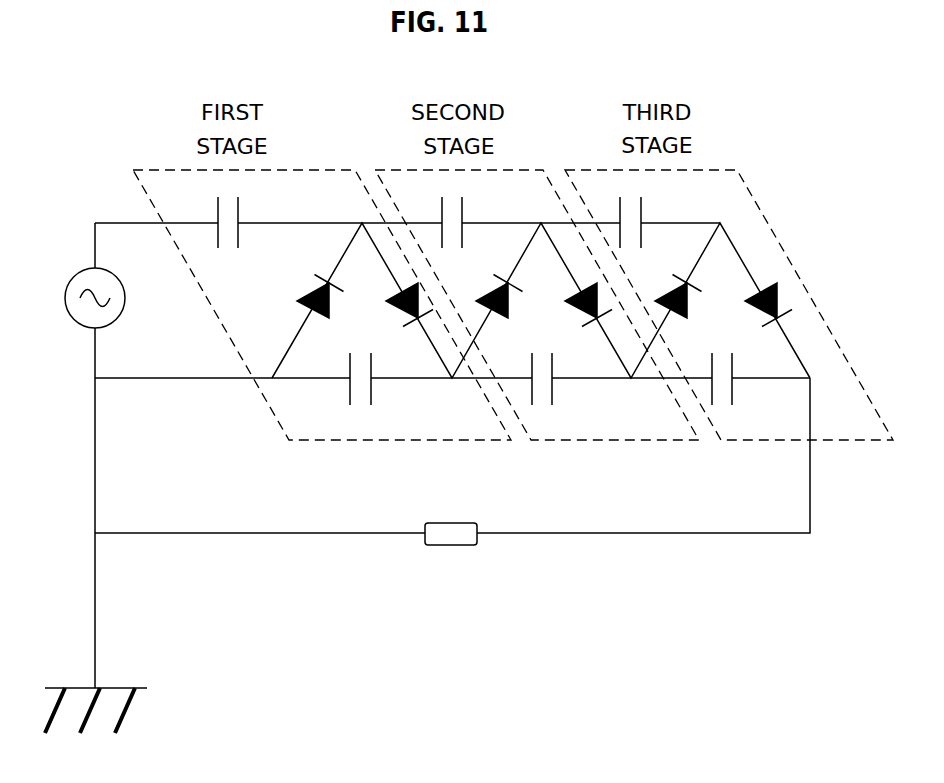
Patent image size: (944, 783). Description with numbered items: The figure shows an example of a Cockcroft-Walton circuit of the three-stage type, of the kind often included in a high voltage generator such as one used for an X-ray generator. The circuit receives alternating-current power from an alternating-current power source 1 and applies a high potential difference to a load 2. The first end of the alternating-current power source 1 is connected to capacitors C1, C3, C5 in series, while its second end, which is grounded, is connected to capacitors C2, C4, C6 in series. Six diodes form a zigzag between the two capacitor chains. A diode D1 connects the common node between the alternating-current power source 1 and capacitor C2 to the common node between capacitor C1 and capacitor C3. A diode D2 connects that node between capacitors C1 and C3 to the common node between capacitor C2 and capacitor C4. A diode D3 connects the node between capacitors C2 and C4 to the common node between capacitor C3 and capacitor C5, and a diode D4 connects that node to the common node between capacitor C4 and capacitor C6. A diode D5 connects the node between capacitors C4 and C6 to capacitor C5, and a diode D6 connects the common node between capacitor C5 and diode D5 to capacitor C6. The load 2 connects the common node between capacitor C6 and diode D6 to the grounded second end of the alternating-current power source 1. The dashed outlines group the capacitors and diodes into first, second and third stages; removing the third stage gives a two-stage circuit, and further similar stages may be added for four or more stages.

The alternating-current power source 1 is at (72, 280).
The load 2 is at (450, 523).
The capacitor C1 is at (232, 240).
The capacitor C2 is at (378, 387).
The capacitor C3 is at (471, 230).
The capacitor C4 is at (560, 387).
The capacitor C5 is at (649, 229).
The capacitor C6 is at (740, 387).
The diode D1 is at (320, 314).
The diode D2 is at (409, 320).
The diode D3 is at (499, 314).
The diode D4 is at (588, 322).
The diode D5 is at (678, 314).
The diode D6 is at (768, 322).